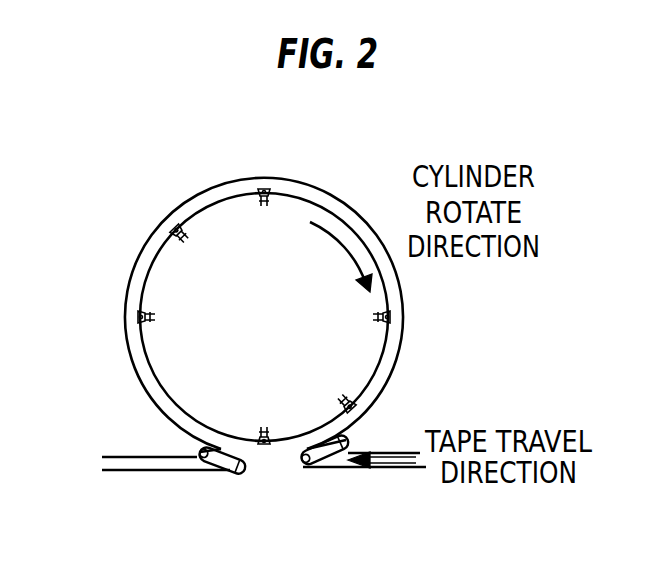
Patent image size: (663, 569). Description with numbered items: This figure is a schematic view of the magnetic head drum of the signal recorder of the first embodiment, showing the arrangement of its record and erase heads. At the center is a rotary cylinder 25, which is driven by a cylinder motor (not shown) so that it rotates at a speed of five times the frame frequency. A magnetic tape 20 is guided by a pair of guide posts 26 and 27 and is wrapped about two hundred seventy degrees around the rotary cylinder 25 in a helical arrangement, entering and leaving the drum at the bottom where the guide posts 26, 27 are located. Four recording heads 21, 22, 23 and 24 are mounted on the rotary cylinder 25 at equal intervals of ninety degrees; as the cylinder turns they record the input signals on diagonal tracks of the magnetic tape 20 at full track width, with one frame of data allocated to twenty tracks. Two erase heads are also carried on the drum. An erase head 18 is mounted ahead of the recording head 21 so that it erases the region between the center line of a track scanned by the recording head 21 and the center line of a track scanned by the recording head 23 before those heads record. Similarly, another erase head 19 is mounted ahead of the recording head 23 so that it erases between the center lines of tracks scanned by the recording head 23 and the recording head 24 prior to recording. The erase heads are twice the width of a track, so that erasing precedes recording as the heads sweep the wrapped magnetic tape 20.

The erase head 18 is at (358, 408).
The erase head 19 is at (180, 229).
The magnetic tape 20 is at (136, 270).
The recording head 21 is at (396, 318).
The recording head 22 is at (263, 189).
The recording head 23 is at (140, 318).
The recording head 24 is at (255, 476).
The rotary cylinder 25 is at (152, 376).
The guide post 26 is at (194, 448).
The guide post 27 is at (324, 478).